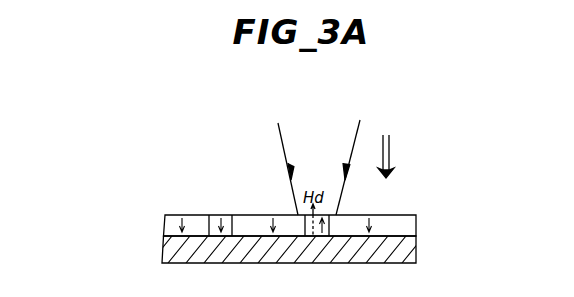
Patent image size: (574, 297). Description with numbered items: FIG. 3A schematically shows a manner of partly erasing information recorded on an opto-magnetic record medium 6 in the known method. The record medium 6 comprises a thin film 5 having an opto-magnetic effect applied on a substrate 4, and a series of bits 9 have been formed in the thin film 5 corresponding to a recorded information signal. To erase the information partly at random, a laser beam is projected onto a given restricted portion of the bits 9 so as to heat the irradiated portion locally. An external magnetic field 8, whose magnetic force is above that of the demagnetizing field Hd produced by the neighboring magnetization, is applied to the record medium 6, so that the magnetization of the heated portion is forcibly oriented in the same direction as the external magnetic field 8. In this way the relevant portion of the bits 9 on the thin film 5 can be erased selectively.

The substrate 4 is at (410, 251).
The thin film 5 is at (410, 223).
The record medium 6 is at (273, 239).
The external magnetic field 8 is at (391, 150).
The bits 9 is at (220, 215).